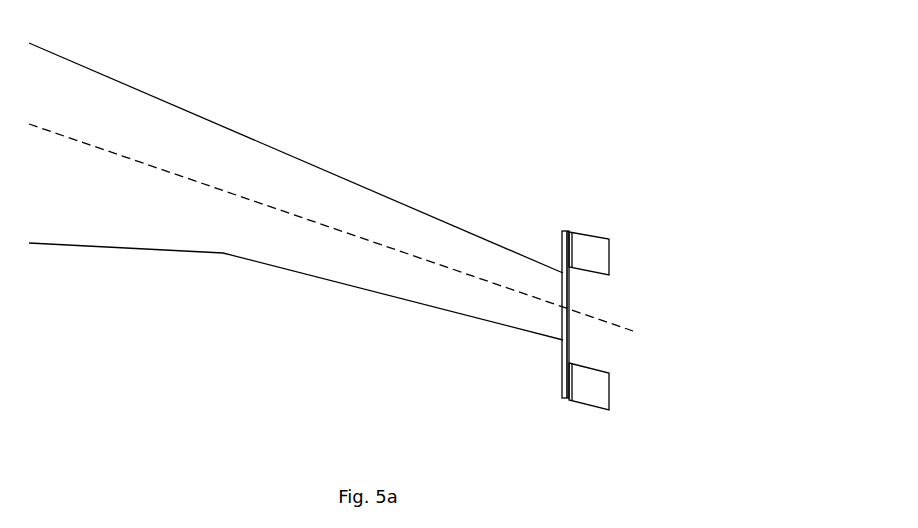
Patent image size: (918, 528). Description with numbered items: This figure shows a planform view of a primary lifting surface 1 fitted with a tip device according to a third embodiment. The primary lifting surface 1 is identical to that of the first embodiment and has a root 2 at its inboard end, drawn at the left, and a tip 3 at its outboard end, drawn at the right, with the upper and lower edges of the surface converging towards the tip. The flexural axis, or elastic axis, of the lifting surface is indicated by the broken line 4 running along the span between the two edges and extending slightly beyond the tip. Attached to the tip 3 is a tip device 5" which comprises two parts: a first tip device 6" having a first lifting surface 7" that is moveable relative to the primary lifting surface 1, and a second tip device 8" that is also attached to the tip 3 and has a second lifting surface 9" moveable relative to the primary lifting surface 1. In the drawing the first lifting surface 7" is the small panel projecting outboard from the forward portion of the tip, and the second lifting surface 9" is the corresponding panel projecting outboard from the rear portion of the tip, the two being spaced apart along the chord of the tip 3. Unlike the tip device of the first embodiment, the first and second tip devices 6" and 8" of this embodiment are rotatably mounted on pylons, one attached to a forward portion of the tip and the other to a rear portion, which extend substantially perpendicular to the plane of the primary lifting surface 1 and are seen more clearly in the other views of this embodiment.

The primary lifting surface 1 is at (368, 157).
The root 2 is at (61, 268).
The tip 3 is at (538, 353).
The flexural axis 4 is at (533, 312).
The tip device 5 is at (635, 197).
The first tip device 6 is at (635, 248).
The first lifting surface 7 is at (584, 253).
The second tip device 8 is at (637, 385).
The second lifting surface 9 is at (587, 387).